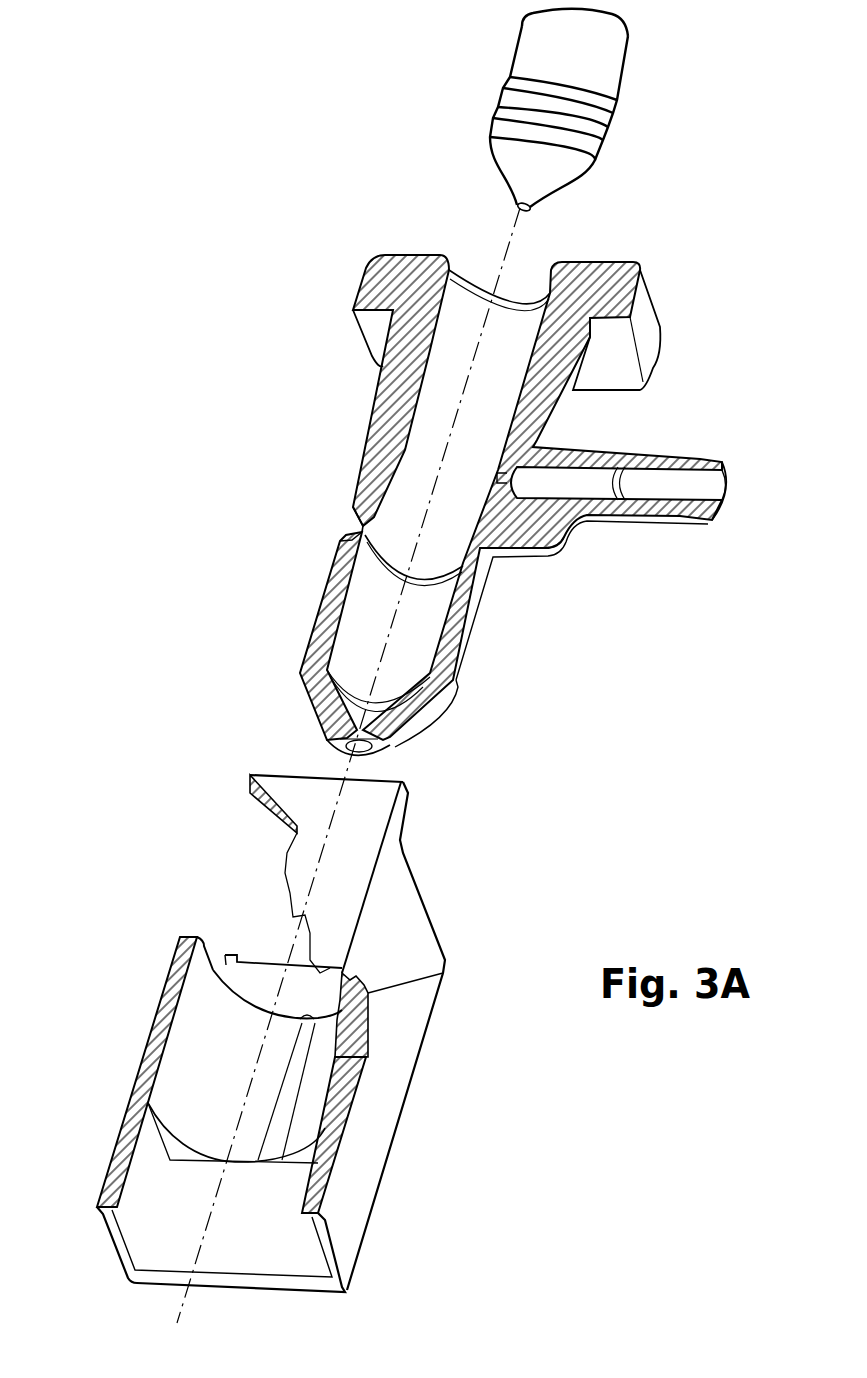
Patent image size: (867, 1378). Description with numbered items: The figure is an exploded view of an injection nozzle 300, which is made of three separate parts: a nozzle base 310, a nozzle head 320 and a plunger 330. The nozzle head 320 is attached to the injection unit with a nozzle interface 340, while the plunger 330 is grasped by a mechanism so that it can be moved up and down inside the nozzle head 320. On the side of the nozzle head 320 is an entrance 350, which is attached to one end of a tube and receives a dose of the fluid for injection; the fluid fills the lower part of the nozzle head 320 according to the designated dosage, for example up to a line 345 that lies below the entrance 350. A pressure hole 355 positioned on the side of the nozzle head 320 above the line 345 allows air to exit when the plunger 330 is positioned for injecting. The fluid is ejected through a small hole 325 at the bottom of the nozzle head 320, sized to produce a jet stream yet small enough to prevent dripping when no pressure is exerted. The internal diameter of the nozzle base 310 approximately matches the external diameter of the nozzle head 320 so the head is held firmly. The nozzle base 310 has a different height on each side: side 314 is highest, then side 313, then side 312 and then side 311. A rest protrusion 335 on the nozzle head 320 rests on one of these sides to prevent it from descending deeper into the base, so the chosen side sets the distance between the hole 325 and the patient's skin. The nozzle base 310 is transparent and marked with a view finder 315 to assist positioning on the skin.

The nozzle 300 is at (140, 193).
The nozzle base 310 is at (175, 1290).
The side 311 is at (220, 950).
The side 312 is at (263, 960).
The side 313 is at (412, 887).
The side 314 is at (292, 775).
The view finder 315 is at (280, 1093).
The nozzle head 320 is at (372, 443).
The small hole 325 is at (368, 752).
The plunger 330 is at (621, 91).
The rest protrusion 335 is at (530, 557).
The nozzle interface 340 is at (656, 304).
The line 345 is at (373, 450).
The entrance 350 is at (661, 525).
The pressure hole 355 is at (364, 528).